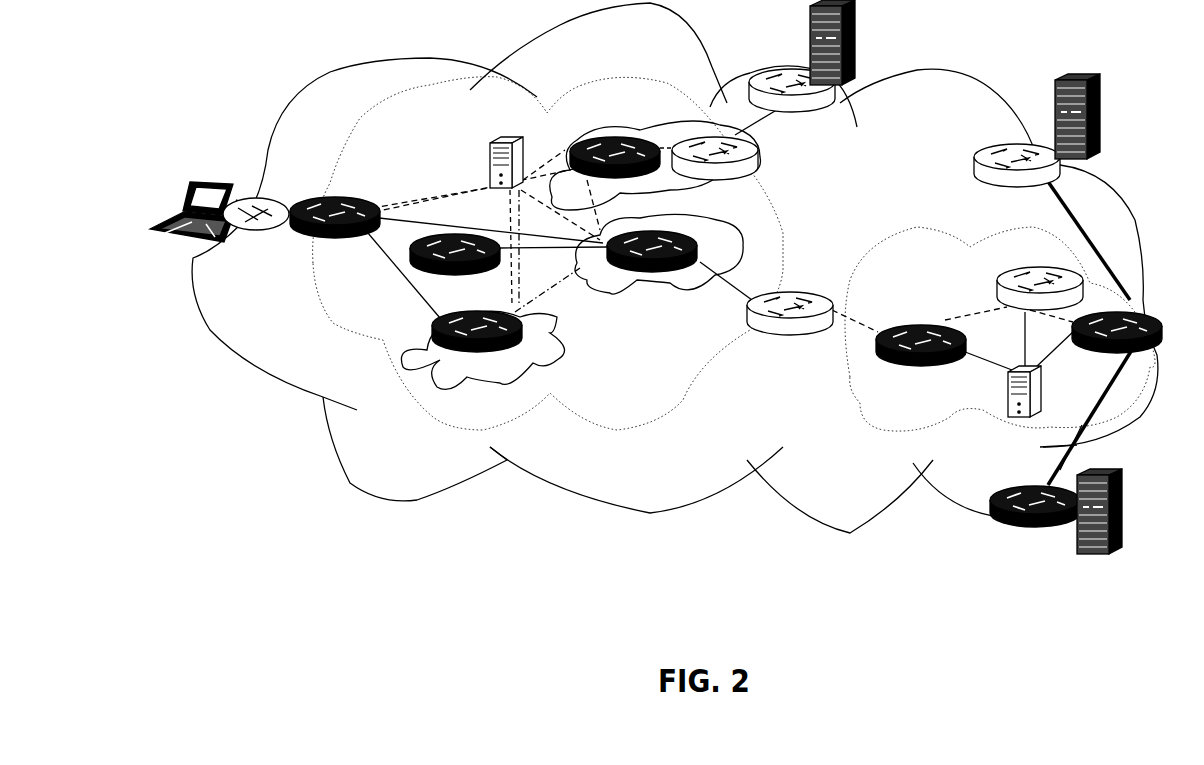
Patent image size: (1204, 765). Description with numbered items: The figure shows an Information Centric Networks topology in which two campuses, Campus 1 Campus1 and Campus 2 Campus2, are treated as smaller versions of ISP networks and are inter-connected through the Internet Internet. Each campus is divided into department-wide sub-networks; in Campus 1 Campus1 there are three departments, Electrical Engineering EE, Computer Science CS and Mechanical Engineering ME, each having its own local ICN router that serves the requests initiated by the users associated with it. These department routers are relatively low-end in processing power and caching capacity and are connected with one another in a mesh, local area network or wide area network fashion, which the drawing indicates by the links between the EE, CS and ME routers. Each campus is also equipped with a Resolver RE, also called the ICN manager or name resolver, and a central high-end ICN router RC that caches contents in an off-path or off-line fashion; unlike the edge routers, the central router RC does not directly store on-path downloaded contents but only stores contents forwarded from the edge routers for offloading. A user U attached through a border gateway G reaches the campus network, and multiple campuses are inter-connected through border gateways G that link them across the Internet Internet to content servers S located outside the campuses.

The user U is at (209, 226).
The border gateway G is at (704, 222).
The Resolver RE is at (763, 258).
The Mechanical Engineering department ICN router ME is at (615, 139).
The central high-end ICN router RC is at (455, 265).
The Computer Science department ICN router CS is at (652, 275).
The Electrical Engineering department ICN router EE is at (477, 364).
The server S is at (952, 279).
The element Internet is at (675, 275).
The Campus 1 Campus1 is at (548, 269).
The Campus 2 Campus2 is at (1000, 344).